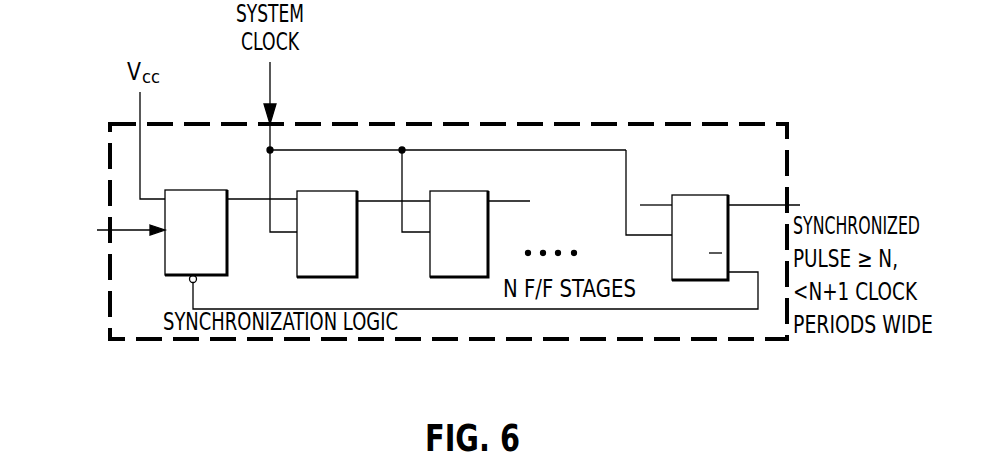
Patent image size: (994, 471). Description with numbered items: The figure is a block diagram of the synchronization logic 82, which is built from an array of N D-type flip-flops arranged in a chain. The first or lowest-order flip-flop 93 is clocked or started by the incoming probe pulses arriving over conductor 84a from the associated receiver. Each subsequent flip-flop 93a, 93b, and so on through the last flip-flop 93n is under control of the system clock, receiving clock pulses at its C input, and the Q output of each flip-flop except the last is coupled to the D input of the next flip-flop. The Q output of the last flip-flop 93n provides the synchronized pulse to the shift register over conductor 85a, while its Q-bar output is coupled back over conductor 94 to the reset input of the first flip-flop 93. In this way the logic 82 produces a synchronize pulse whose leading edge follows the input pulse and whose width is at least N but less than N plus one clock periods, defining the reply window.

The synchronization logic 82 is at (670, 150).
The conductor 84a is at (108, 232).
The conductor 85a is at (792, 204).
The flip-flop 93 is at (226, 268).
The flip-flop 93a is at (350, 268).
The flip-flop 93b is at (480, 268).
The last flip-flop 93n is at (683, 268).
The conductor 94 is at (550, 312).